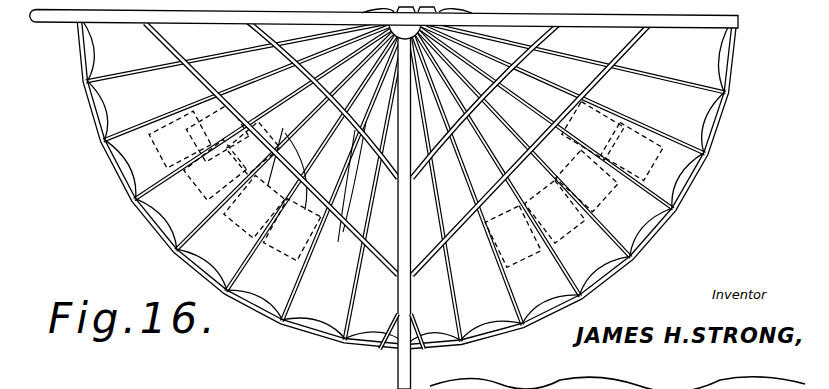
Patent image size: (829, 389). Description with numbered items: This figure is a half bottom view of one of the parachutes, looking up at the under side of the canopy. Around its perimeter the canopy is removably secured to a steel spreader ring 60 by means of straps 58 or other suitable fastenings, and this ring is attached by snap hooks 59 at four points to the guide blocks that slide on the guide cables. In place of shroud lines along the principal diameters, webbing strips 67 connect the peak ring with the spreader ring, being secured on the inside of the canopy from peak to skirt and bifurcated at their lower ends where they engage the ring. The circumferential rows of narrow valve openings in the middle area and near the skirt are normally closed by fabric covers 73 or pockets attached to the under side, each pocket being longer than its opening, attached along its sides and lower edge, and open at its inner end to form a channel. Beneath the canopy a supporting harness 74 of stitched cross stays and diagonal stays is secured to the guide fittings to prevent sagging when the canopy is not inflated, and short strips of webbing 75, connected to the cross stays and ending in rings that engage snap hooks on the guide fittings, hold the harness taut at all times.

The straps 58 is at (704, 199).
The snap hooks 59 is at (707, 71).
The spreader ring 60 is at (722, 128).
The webbing strips 67 is at (739, 20).
The fabric covers 73 is at (220, 118).
The supporting harness 74 is at (405, 227).
The short strips of webbing 75 is at (397, 377).